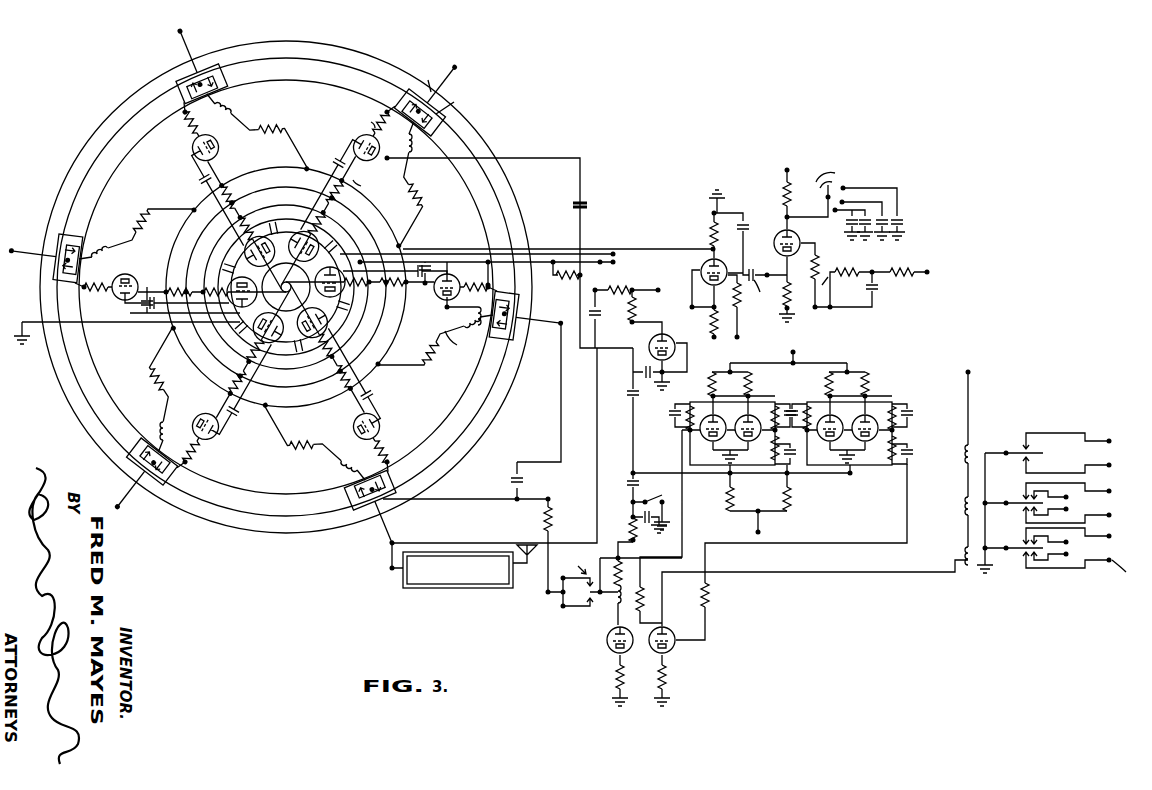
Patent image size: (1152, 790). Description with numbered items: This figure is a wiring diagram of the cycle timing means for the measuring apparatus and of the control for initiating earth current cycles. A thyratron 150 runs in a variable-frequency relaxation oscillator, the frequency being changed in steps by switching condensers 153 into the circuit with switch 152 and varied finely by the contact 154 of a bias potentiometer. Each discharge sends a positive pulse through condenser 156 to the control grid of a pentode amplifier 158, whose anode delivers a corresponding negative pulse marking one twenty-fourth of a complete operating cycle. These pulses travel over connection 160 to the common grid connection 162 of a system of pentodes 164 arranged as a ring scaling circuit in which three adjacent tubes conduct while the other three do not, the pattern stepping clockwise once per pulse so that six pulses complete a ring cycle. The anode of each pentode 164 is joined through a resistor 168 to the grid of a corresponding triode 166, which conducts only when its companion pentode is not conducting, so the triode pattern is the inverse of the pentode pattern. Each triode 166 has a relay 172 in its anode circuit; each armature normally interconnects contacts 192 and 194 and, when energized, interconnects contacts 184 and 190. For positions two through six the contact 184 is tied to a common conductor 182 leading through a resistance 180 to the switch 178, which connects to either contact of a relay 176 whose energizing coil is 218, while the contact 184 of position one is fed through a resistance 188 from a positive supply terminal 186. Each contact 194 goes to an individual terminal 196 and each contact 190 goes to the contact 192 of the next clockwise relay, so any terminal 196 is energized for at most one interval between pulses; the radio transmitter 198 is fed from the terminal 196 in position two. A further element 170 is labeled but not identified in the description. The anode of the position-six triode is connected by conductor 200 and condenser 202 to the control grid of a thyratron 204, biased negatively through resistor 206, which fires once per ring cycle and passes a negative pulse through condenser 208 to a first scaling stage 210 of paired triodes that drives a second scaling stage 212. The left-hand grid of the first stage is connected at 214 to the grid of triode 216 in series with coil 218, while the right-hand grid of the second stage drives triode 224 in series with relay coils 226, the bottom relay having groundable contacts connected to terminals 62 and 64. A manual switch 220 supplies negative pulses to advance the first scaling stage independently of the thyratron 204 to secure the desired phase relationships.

The terminal 62 is at (1112, 537).
The terminal 64 is at (1130, 571).
The thyratron 150 is at (778, 242).
The switch 152 is at (846, 194).
The condensers 153 is at (898, 216).
The contact of bias potentiometer 154 is at (824, 284).
The condenser 156 is at (773, 292).
The pentode amplifier 158 is at (710, 264).
The connection 160 is at (431, 253).
The common grid connection 162 is at (204, 260).
The pentodes 164 is at (290, 208).
The triodes 166 is at (217, 147).
The resistor 168 is at (373, 186).
The resistor 170 is at (360, 119).
The relay 172 is at (413, 160).
The relay 176 is at (579, 560).
The switch 178 is at (551, 590).
The resistance 180 is at (544, 518).
The common conductor 182 is at (491, 380).
The relay contact 184 is at (184, 118).
The positive potential supply terminal 186 is at (638, 296).
The resistance 188 is at (611, 318).
The relay contact 190 is at (431, 77).
The relay contact 192 is at (478, 334).
The relay contact 194 is at (461, 100).
The terminal 196 is at (180, 31).
The radio transmitter 198 is at (466, 590).
The conductor 200 is at (528, 158).
The condenser 202 is at (570, 204).
The thyratron 204 is at (670, 332).
The resistor 206 is at (578, 284).
The condenser 208 is at (630, 390).
The first scaling stage 210 is at (702, 391).
The second scaling stage 212 is at (817, 391).
The connection 214 is at (683, 516).
The triode 216 is at (602, 630).
The energizing coil 218 is at (646, 583).
The manual switch 220 is at (666, 483).
The triode 224 is at (674, 630).
The relay coils 226 is at (964, 532).